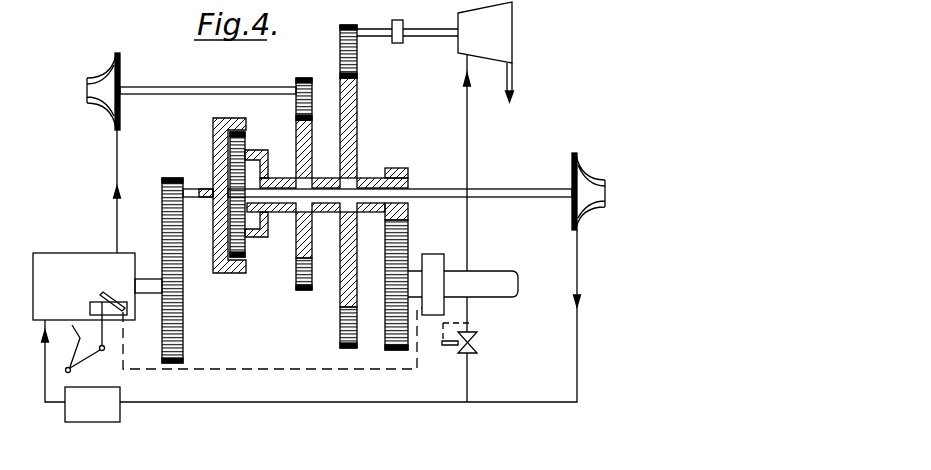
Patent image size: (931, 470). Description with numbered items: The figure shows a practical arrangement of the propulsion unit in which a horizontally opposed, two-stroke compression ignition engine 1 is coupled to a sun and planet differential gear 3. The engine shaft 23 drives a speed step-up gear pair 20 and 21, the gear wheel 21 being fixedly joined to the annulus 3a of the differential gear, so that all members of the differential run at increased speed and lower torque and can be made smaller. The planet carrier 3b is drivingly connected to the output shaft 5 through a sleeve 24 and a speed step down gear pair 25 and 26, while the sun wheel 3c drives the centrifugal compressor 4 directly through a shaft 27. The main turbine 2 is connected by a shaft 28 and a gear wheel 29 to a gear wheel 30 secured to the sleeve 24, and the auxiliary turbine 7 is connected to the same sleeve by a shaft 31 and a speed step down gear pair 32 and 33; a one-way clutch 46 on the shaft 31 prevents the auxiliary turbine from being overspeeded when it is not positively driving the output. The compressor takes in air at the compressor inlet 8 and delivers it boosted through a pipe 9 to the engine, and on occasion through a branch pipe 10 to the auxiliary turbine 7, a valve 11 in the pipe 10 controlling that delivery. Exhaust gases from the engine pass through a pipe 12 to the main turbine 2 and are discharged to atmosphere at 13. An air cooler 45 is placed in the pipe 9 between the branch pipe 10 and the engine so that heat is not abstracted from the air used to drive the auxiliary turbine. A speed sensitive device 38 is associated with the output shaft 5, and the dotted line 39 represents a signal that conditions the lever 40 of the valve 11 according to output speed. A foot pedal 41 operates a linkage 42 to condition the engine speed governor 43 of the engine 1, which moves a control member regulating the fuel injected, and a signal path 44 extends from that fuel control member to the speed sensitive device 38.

The engine 1 is at (58, 262).
The main turbine 2 is at (117, 53).
The sun and planet differential gear 3 is at (224, 208).
The annulus 3a is at (215, 122).
The planet carrier 3b is at (262, 150).
The sun wheel 3c is at (235, 193).
The compressor 4 is at (577, 160).
The output shaft 5 is at (490, 277).
The auxiliary turbine 7 is at (465, 47).
The compressor inlet 8 is at (618, 202).
The pipe 9 is at (283, 402).
The branch pipe 10 is at (468, 137).
The valve 11 is at (476, 348).
The pipe 12 is at (115, 213).
The exhaust discharge 13 is at (82, 99).
The gear wheel 20 is at (183, 333).
The gear wheel 21 is at (162, 192).
The engine shaft 23 is at (145, 288).
The sleeve 24 is at (323, 185).
The gear wheel 25 is at (408, 180).
The gear wheel 26 is at (408, 247).
The shaft 27 is at (505, 193).
The shaft 28 is at (170, 88).
The gear wheel 29 is at (295, 80).
The gear wheel 30 is at (307, 138).
The shaft 31 is at (433, 37).
The gear wheel 32 is at (340, 33).
The gear wheel 33 is at (357, 118).
The speed sensitive device 38 is at (433, 262).
The signal path 39 is at (470, 323).
The lever 40 is at (453, 345).
The foot pedal 41 is at (71, 327).
The linkage 42 is at (85, 358).
The engine speed governor 43 is at (123, 303).
The signal path 44 is at (285, 368).
The air cooler 45 is at (115, 415).
The one-way clutch 46 is at (397, 43).